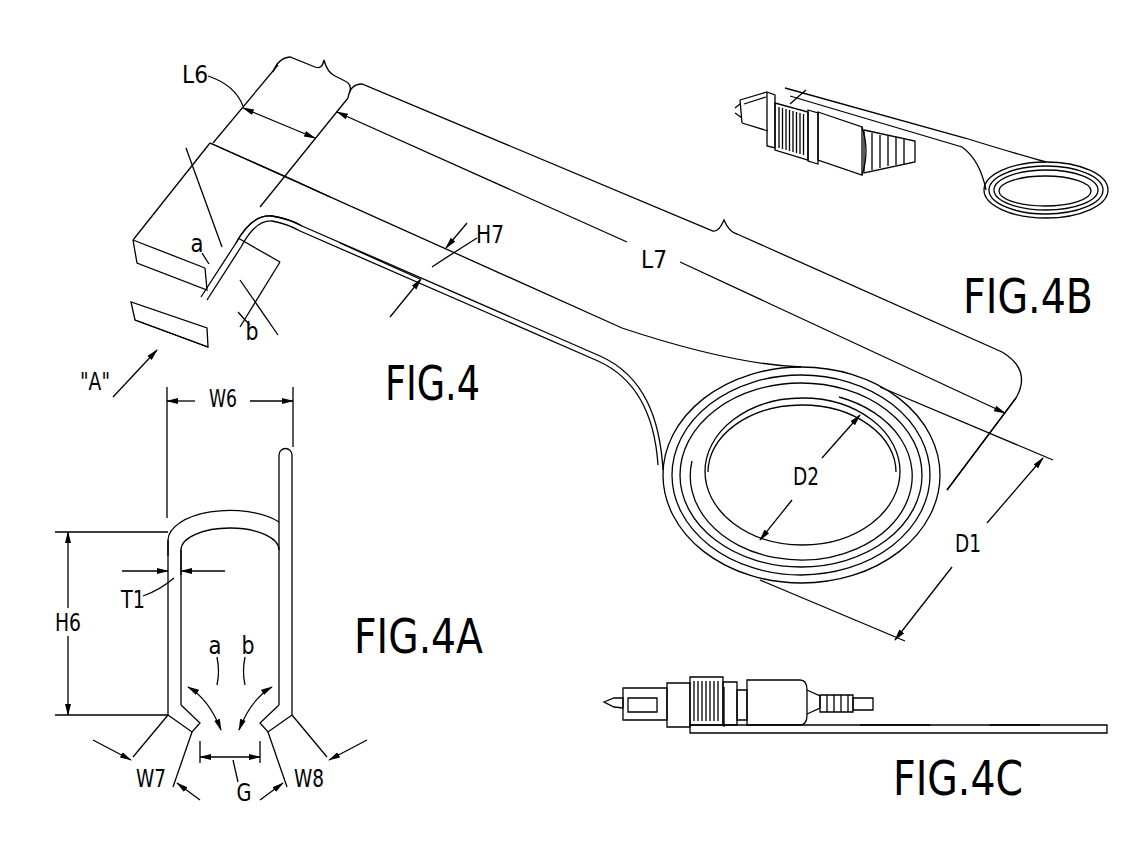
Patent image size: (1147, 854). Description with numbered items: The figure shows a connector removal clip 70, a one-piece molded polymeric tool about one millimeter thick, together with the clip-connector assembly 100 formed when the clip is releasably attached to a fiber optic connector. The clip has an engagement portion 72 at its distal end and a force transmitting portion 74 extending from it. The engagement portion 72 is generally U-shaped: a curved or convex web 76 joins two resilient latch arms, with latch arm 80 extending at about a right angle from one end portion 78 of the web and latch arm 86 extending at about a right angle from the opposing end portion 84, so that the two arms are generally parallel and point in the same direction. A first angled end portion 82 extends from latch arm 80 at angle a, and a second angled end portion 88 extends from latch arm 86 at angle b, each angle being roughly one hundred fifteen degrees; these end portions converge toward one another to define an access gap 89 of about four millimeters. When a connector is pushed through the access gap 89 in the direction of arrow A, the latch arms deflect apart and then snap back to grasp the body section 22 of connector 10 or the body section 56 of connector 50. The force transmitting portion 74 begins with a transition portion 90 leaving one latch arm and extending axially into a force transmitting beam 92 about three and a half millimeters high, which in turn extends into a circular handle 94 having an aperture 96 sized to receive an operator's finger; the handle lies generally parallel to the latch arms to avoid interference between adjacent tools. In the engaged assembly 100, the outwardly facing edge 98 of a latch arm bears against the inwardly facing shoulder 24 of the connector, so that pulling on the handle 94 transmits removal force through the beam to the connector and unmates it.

In FIG. 4B, the connector 10 is at (866, 186).
In FIG. 4B, the body section 22 is at (728, 130).
In FIG. 4B, the shoulder 24 is at (818, 112).
In FIG. 4C, the shoulder 24 is at (713, 687).
In FIG. 4B, the connector 50 is at (845, 178).
In FIG. 4C, the connector 50 is at (793, 677).
In FIG. 4B, the body section 56 is at (776, 152).
In FIG. 4, the connector removal clip 70 is at (510, 278).
In FIG. 4B, the connector removal clip 70 is at (962, 128).
In FIG. 4C, the connector removal clip 70 is at (930, 725).
In FIG. 4, the engagement portion 72 is at (311, 61).
In FIG. 4, the force transmitting portion 74 is at (685, 287).
In FIG. 4, the web 76 is at (282, 232).
In FIG. 4A, the web 76 is at (220, 512).
In FIG. 4, the end portion 78 is at (260, 172).
In FIG. 4A, the end portion 78 is at (178, 515).
In FIG. 4, the latch arm 80 is at (180, 213).
In FIG. 4A, the latch arm 80 is at (169, 638).
In FIG. 4, the first angled end portion 82 is at (133, 245).
In FIG. 4A, the first angled end portion 82 is at (170, 720).
In FIG. 4, the end portion 84 is at (280, 263).
In FIG. 4A, the end portion 84 is at (277, 552).
In FIG. 4, the latch arm 86 is at (262, 290).
In FIG. 4A, the latch arm 86 is at (293, 610).
In FIG. 4, the second angled end portion 88 is at (175, 332).
In FIG. 4A, the second angled end portion 88 is at (296, 730).
In FIG. 4, the access gap 89 is at (137, 285).
In FIG. 4, the transition portion 90 is at (312, 197).
In FIG. 4, the force transmitting beam 92 is at (380, 247).
In FIG. 4C, the force transmitting beam 92 is at (892, 723).
In FIG. 4, the circular handle 94 is at (665, 446).
In FIG. 4A, the circular handle 94 is at (293, 483).
In FIG. 4B, the circular handle 94 is at (1048, 160).
In FIG. 4C, the circular handle 94 is at (1007, 725).
In FIG. 4, the aperture 96 is at (790, 420).
In FIG. 4, the edge 98 is at (232, 240).
In FIG. 4B, the edge 98 is at (790, 104).
In FIG. 4C, the edge 98 is at (723, 687).
In FIG. 4B, the clip-connector assembly 100 is at (894, 150).